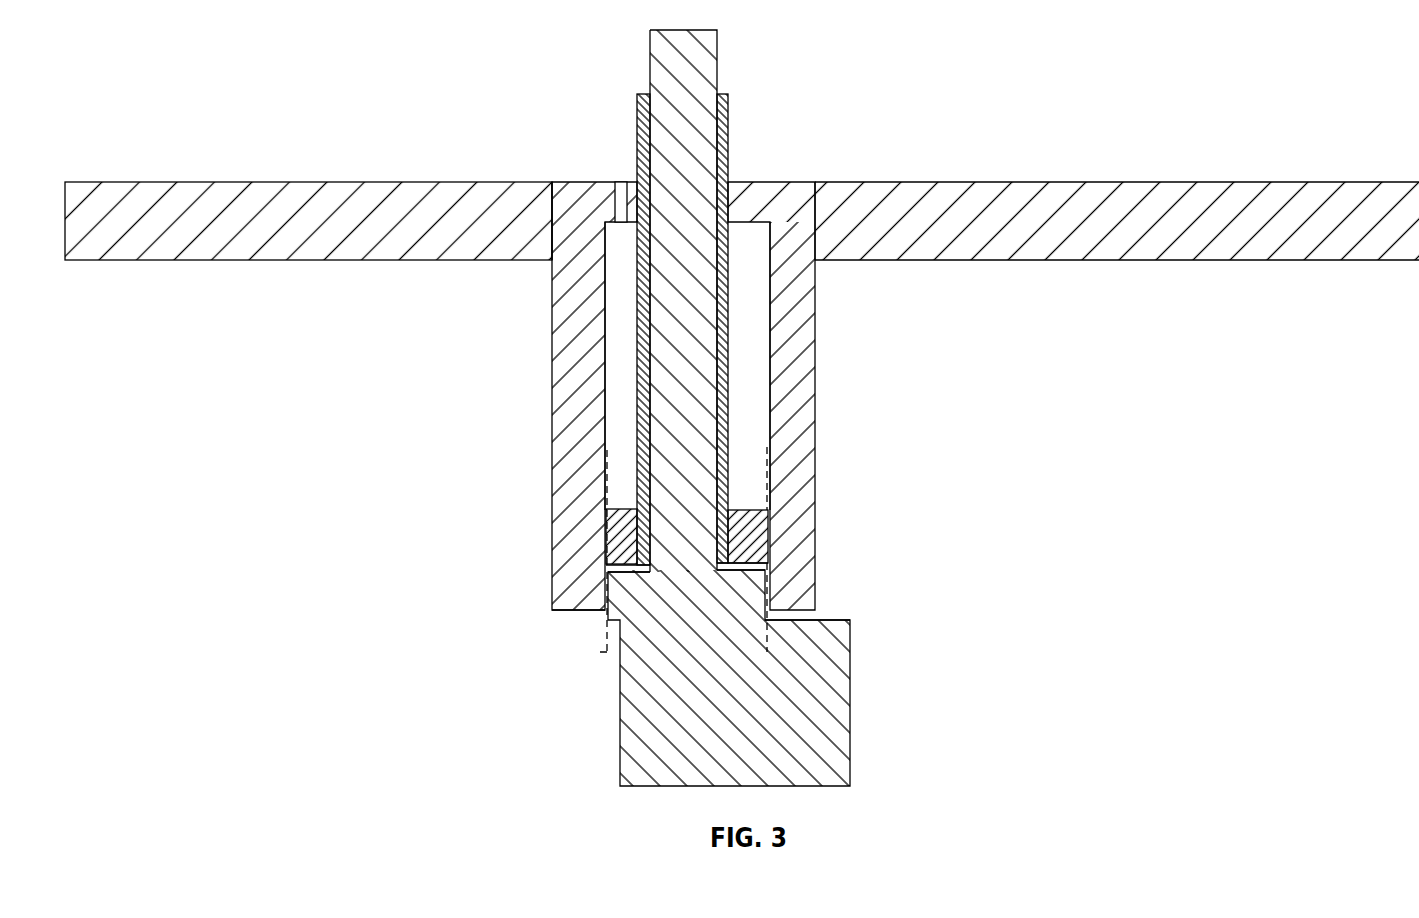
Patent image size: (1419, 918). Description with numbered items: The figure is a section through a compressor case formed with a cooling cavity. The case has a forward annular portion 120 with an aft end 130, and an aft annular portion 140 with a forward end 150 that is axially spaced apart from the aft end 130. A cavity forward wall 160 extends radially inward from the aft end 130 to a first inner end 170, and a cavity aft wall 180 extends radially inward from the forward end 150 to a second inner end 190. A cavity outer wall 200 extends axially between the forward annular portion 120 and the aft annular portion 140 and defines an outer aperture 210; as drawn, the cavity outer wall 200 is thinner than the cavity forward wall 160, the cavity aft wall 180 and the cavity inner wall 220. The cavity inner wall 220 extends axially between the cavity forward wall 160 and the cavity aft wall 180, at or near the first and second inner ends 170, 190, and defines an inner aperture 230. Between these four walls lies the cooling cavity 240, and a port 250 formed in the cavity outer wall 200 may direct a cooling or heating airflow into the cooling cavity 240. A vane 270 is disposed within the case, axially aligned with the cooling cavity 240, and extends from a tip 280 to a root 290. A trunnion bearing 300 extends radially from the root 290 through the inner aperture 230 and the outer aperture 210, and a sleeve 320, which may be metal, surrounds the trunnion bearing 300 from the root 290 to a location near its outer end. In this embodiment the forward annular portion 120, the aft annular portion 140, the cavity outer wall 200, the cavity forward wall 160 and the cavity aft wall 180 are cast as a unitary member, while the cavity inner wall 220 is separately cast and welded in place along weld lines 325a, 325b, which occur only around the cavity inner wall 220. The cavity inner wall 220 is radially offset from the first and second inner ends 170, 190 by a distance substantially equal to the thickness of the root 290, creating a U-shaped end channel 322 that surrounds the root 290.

The forward annular portion 120 is at (450, 182).
The aft annular portion 140 is at (993, 182).
The aft end 130 is at (546, 267).
The forward end 150 is at (819, 265).
The cavity forward wall 160 is at (577, 397).
The cavity aft wall 180 is at (815, 413).
The first inner end 170 is at (568, 612).
The second inner end 190 is at (793, 621).
The cavity outer wall 200 is at (745, 182).
The outer aperture 210 is at (637, 180).
The cavity inner wall 220 is at (763, 530).
The inner aperture 230 is at (728, 573).
The cooling cavity 240 is at (750, 400).
The port 250 is at (618, 182).
The vane 270 is at (783, 728).
The tip 280 is at (850, 786).
The root 290 is at (632, 600).
The trunnion bearing 300 is at (680, 258).
The sleeve 320 is at (628, 320).
The U-shaped end channel 322 is at (612, 567).
The weld line 325a is at (607, 652).
The weld line 325b is at (767, 652).